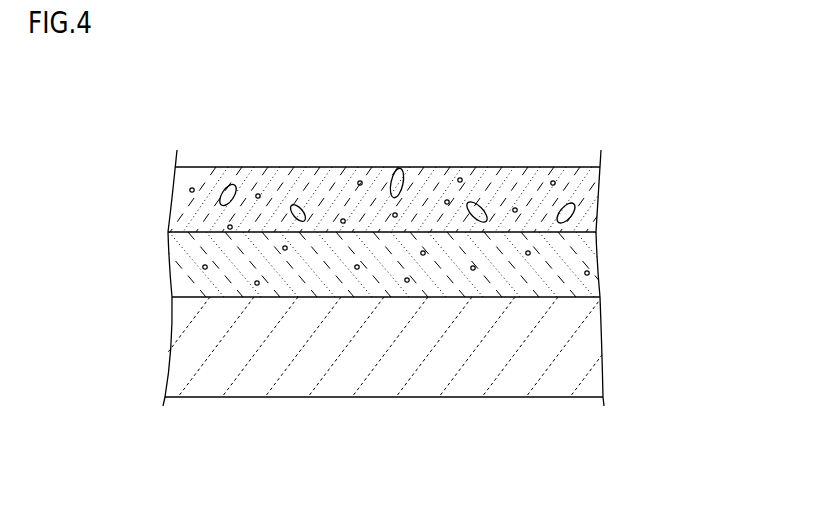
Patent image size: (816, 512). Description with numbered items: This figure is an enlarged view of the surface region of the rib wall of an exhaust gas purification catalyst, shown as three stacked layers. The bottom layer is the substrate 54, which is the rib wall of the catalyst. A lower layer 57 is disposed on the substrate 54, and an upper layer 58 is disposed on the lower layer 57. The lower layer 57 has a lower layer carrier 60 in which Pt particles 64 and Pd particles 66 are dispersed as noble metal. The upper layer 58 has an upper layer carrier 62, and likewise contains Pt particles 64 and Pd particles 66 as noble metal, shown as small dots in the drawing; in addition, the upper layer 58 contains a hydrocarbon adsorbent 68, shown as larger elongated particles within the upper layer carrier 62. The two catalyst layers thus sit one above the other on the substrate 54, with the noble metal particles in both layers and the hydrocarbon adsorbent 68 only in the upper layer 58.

The substrate 54 is at (505, 386).
The lower layer 57 is at (166, 276).
The upper layer 58 is at (166, 211).
The lower layer carrier 60 is at (602, 284).
The upper layer carrier 62 is at (588, 178).
The Pt particle 64 is at (259, 194).
The Pd particle 66 is at (358, 181).
The hydrocarbon adsorbent 68 is at (400, 178).